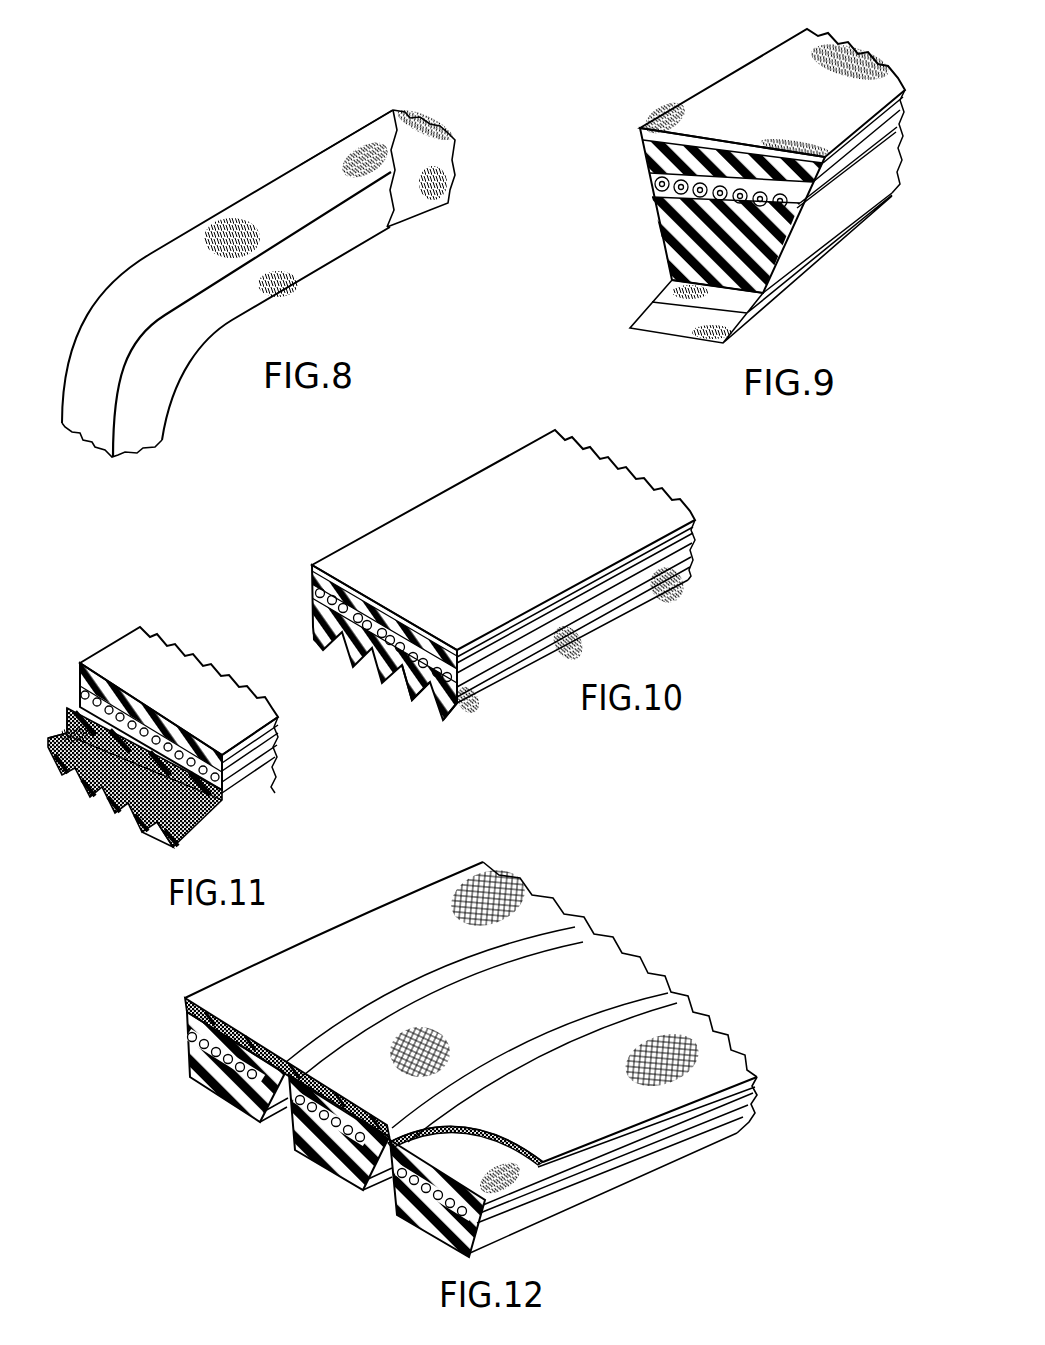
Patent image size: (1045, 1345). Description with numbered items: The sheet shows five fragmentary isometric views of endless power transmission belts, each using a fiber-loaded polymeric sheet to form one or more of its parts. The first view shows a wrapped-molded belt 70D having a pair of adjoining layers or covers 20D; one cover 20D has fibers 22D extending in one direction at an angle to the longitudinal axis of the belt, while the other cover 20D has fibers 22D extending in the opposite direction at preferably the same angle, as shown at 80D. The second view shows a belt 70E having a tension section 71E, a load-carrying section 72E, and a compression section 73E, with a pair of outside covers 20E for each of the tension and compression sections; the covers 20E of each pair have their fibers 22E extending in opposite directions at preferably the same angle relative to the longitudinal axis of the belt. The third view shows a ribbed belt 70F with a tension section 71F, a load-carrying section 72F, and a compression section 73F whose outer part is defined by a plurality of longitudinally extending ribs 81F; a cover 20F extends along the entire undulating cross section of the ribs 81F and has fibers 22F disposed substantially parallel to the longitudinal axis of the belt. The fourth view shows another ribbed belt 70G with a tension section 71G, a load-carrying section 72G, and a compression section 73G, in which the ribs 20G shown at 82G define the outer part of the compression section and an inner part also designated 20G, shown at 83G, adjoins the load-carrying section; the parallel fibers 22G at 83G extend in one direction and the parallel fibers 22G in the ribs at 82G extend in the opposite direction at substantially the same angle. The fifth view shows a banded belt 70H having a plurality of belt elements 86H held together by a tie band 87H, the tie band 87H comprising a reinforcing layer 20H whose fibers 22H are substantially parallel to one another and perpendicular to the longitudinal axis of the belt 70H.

In FIG. 8, the cover 20D is at (182, 248).
In FIG. 8, the fibers 22D is at (388, 118).
In FIG. 8, the belt 70D is at (250, 178).
In FIG. 8, the fiber direction 80D is at (360, 143).
In FIG. 9, the outside cover 20E is at (690, 103).
In FIG. 9, the fibers 22E is at (833, 60).
In FIG. 9, the belt 70E is at (723, 58).
In FIG. 9, the tension section 71E is at (633, 153).
In FIG. 9, the load-carrying section 72E is at (640, 188).
In FIG. 9, the compression section 73E is at (658, 250).
In FIG. 10, the cover 20F is at (448, 718).
In FIG. 10, the fibers 22F is at (463, 705).
In FIG. 10, the belt 70F is at (425, 470).
In FIG. 10, the tension section 71F is at (306, 568).
In FIG. 10, the load-carrying section 72F is at (306, 590).
In FIG. 10, the compression section 73F is at (306, 617).
In FIG. 10, the ribs 81F is at (410, 697).
In FIG. 11, the ribs and inner part 20G is at (225, 797).
In FIG. 11, the parallel fibers 22G is at (53, 738).
In FIG. 11, the belt 70G is at (165, 632).
In FIG. 11, the tension section 71G is at (236, 761).
In FIG. 11, the load-carrying section 72G is at (236, 781).
In FIG. 11, the compression section 73G is at (216, 818).
In FIG. 11, the ribs location 82G is at (168, 853).
In FIG. 11, the inner part location 83G is at (284, 763).
In FIG. 12, the reinforcing layer 20H is at (502, 1170).
In FIG. 12, the fibers 22H is at (488, 1192).
In FIG. 12, the belt 70H is at (619, 925).
In FIG. 12, the belt elements 86H is at (225, 1107).
In FIG. 12, the tie band 87H is at (185, 1000).